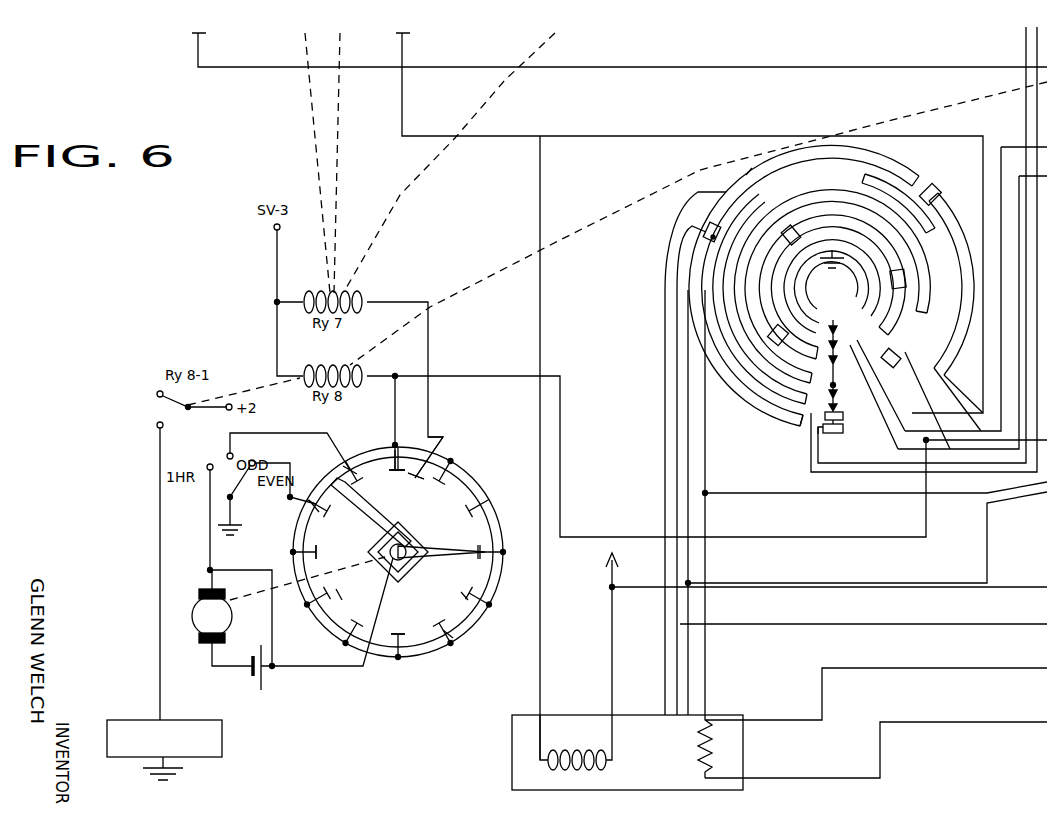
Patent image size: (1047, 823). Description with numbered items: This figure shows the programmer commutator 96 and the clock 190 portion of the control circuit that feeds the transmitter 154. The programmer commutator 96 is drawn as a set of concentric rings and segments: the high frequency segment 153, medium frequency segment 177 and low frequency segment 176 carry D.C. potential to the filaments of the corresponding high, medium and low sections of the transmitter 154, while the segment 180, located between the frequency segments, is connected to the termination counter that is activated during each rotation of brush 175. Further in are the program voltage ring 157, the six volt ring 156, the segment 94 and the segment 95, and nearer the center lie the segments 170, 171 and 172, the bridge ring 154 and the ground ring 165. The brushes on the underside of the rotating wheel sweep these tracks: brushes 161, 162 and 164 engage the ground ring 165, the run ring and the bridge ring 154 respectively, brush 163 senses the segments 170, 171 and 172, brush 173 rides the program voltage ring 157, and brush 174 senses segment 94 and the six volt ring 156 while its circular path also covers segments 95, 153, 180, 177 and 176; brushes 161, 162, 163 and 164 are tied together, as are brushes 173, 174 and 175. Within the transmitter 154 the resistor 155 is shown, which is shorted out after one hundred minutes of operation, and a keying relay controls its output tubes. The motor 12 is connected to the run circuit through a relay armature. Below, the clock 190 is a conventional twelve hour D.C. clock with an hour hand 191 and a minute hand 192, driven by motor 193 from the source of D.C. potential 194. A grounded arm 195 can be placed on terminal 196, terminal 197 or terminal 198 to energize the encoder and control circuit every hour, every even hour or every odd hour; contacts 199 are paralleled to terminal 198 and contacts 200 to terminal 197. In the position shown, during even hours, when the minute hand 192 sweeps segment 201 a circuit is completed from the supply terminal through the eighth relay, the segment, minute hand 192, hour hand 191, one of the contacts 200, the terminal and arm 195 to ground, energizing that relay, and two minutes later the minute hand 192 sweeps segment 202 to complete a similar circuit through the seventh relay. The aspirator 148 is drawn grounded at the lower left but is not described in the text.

The programmer commutator 96 is at (750, 438).
The medium frequency segment 177 is at (806, 155).
The low frequency segment 176 is at (950, 232).
The segment 180 is at (706, 220).
The segment 171 is at (793, 226).
The transmitter 154 is at (512, 736).
The segment 170 is at (888, 280).
The ground ring 165 is at (812, 276).
The brush 161 is at (836, 322).
The brush 162 is at (842, 338).
The segment 172 is at (780, 342).
The brush 163 is at (838, 360).
The brush 164 is at (842, 366).
The segment 94 is at (831, 392).
The brush 173 is at (836, 396).
The brush 174 is at (846, 412).
The brush 175 is at (846, 430).
The segment 95 is at (830, 434).
The high frequency segment 153 is at (770, 430).
The program voltage ring 157 is at (940, 363).
The 6 volt ring 156 is at (930, 388).
The resistor 155 is at (700, 742).
The clock 190 is at (450, 676).
The hour hand 191 is at (430, 548).
The minute hand 192 is at (362, 506).
The contacts 199 is at (332, 596).
The contacts 200 is at (318, 552).
The segment 201 is at (392, 472).
The segment 202 is at (416, 480).
The motor 193 is at (196, 610).
The source of D.C. potential 194 is at (260, 645).
The grounded arm 195 is at (255, 500).
The terminal 196 is at (208, 465).
The terminal 197 is at (228, 456).
The terminal 198 is at (258, 463).
The aspirator 148 is at (142, 718).
The motor 12 is at (421, 435).